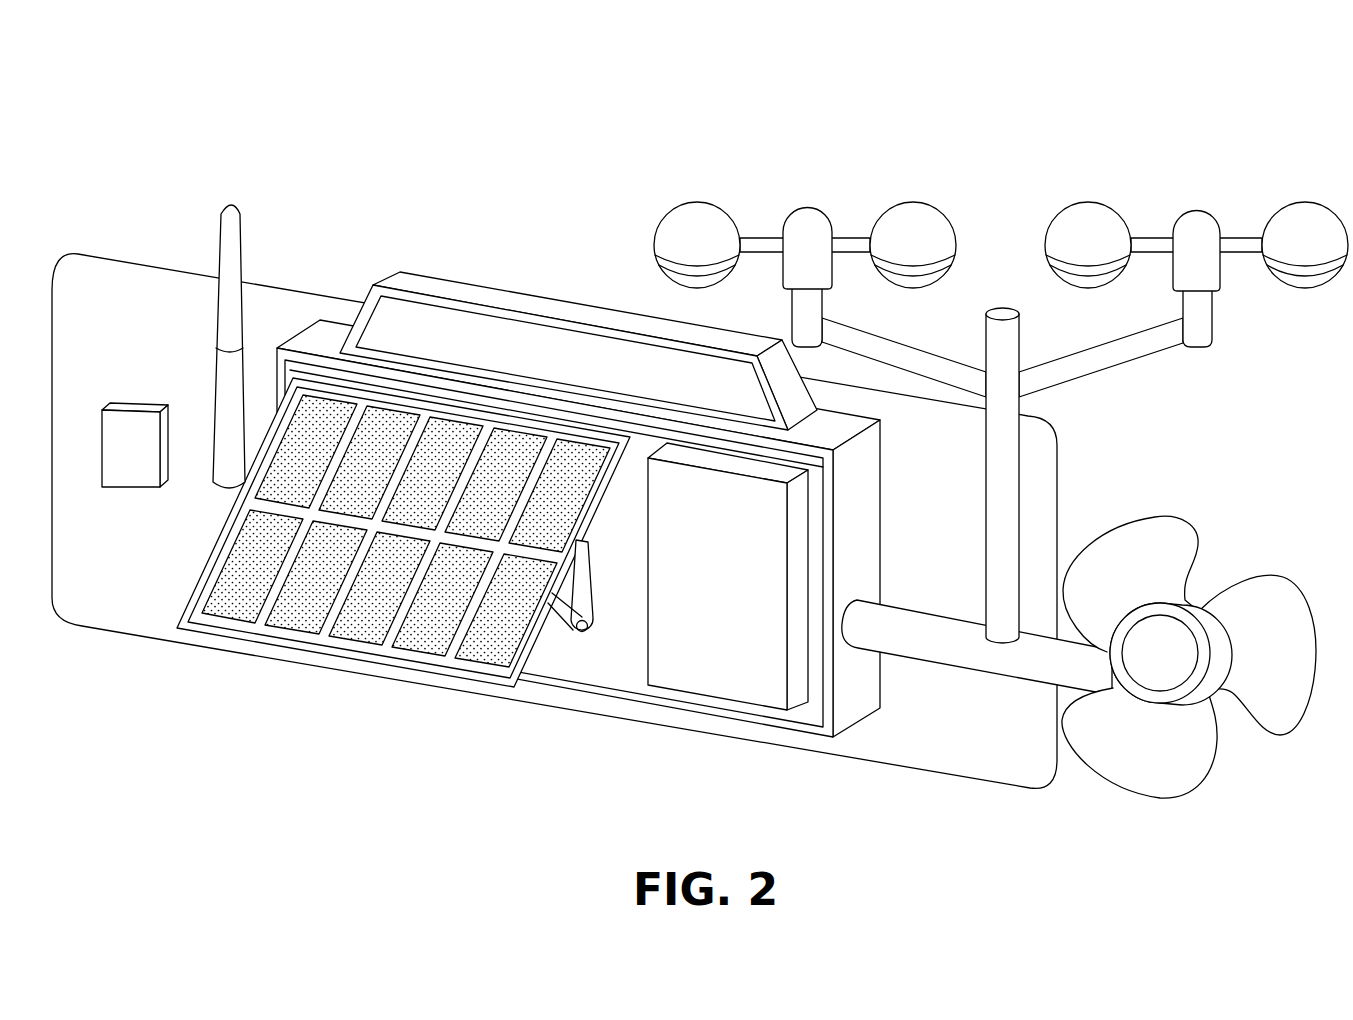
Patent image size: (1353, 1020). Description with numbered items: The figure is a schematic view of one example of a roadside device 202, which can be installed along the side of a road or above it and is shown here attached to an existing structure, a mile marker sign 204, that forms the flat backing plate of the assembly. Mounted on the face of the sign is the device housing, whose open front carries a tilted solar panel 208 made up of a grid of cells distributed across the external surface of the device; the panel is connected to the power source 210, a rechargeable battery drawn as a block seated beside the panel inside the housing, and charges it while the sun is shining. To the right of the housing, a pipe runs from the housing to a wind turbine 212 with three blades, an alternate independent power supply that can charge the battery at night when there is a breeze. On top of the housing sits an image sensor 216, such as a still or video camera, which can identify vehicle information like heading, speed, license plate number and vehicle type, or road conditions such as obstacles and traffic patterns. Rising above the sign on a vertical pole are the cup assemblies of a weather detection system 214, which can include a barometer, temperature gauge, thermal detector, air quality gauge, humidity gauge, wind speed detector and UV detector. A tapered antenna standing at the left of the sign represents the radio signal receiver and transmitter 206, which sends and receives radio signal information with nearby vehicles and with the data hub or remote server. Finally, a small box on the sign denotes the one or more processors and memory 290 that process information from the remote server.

The roadside device 202 is at (381, 118).
The mile marker sign 204 is at (128, 297).
The radio signal receiver and transmitter 206 is at (232, 203).
The solar panel 208 is at (353, 633).
The power source 210 is at (713, 652).
The wind turbine 212 is at (1273, 597).
The weather detection system 214 is at (1007, 208).
The image sensor 216 is at (572, 312).
The processors and memory 290 is at (130, 467).